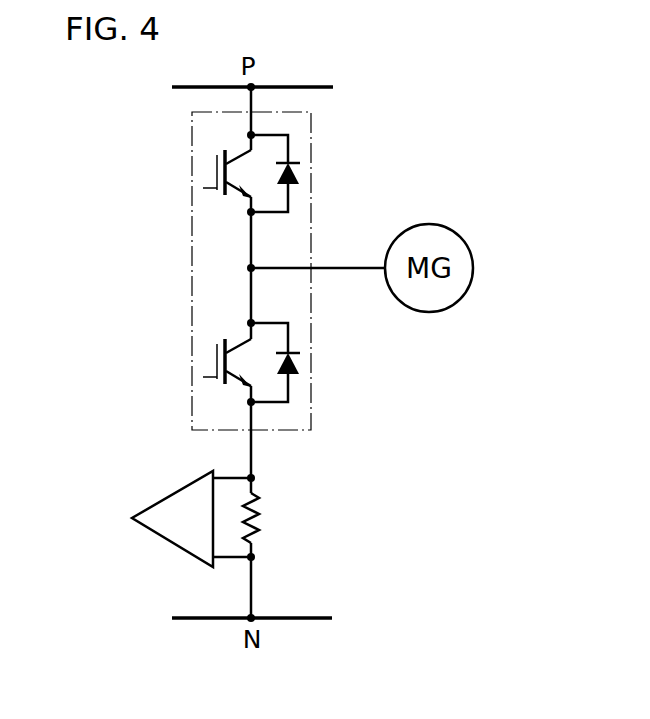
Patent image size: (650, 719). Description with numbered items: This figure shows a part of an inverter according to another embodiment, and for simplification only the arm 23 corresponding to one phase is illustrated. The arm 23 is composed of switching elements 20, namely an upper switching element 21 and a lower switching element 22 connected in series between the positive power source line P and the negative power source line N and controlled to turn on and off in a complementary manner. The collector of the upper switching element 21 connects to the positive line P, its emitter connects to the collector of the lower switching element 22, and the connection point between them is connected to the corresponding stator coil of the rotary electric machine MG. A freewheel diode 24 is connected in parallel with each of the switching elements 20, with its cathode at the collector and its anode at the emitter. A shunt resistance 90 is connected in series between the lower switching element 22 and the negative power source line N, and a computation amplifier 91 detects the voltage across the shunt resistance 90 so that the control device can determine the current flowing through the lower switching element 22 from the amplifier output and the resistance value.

The switching elements 20 is at (165, 252).
The upper switching element 21 is at (240, 152).
The lower switching element 22 is at (238, 343).
The arm 23 is at (312, 160).
The freewheel diode 24 is at (293, 184).
The shunt resistance 90 is at (260, 515).
The computation amplifier 91 is at (175, 532).